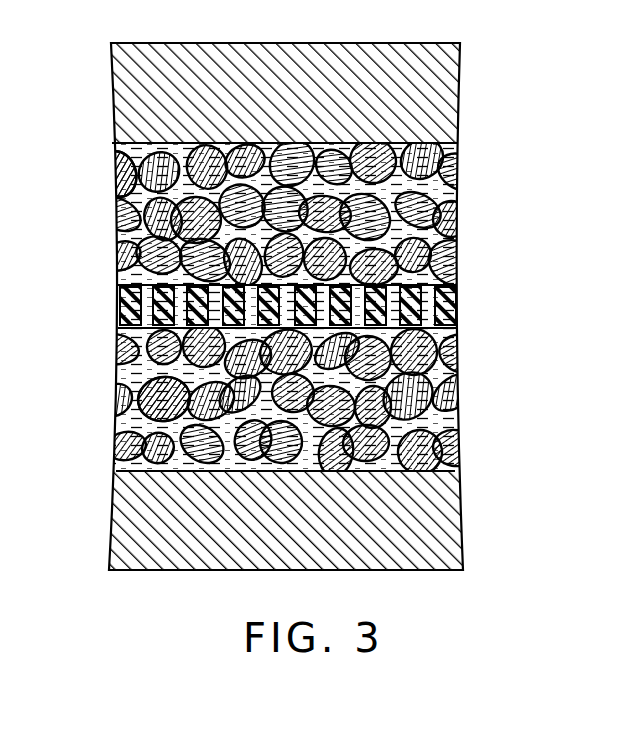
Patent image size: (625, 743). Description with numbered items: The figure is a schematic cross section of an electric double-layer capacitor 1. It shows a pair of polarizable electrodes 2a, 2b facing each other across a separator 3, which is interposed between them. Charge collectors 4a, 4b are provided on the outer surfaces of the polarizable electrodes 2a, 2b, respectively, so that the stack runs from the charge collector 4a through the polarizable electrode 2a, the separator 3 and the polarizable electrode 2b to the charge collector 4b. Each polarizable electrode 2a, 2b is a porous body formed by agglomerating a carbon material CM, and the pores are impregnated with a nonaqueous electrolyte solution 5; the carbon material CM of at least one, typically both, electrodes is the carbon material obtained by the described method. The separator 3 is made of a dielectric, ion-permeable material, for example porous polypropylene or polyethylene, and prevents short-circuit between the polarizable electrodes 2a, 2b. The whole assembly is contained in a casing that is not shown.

The electric double-layer capacitor 1 is at (452, 33).
The polarizable electrode 2a is at (467, 143).
The polarizable electrode 2b is at (467, 328).
The separator 3 is at (458, 305).
The charge collector 4a is at (440, 92).
The charge collector 4b is at (440, 525).
The nonaqueous electrolyte solution 5 is at (118, 458).
The carbon material CM is at (117, 197).